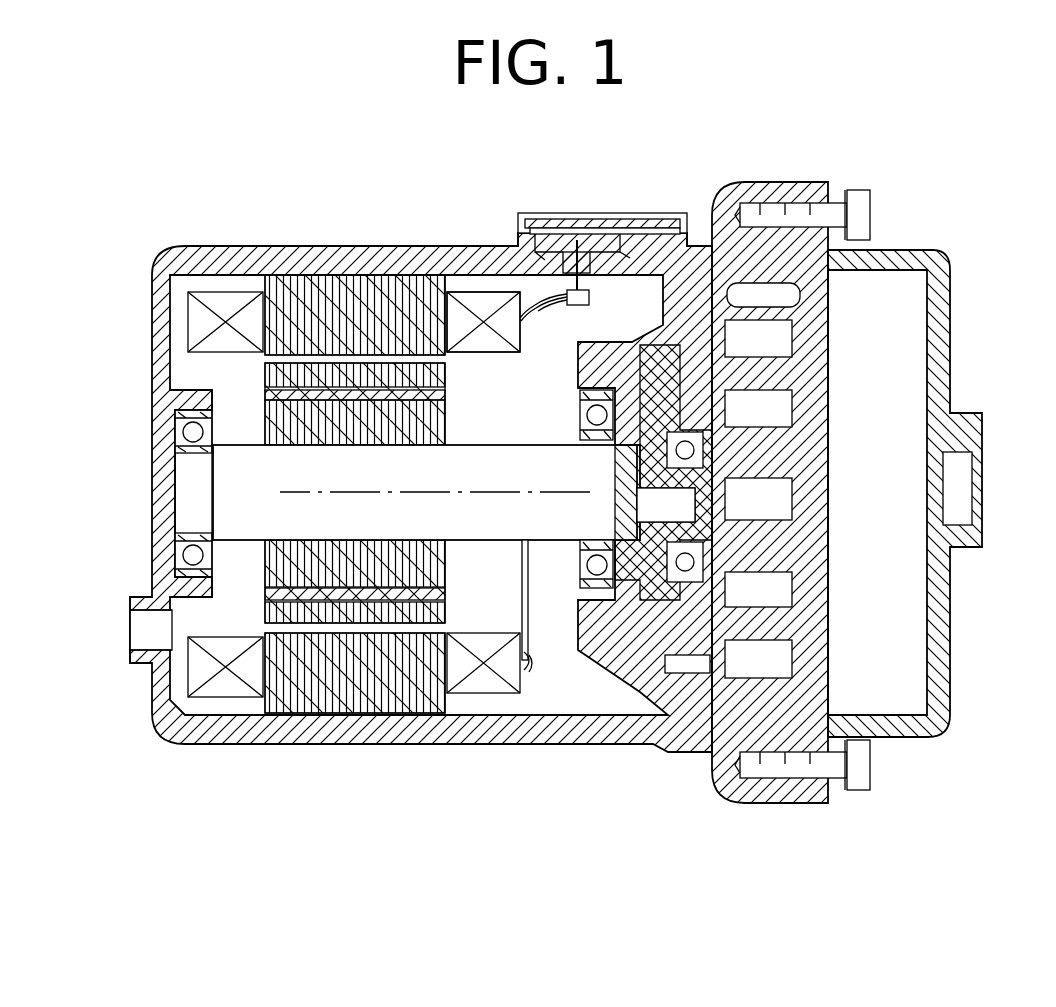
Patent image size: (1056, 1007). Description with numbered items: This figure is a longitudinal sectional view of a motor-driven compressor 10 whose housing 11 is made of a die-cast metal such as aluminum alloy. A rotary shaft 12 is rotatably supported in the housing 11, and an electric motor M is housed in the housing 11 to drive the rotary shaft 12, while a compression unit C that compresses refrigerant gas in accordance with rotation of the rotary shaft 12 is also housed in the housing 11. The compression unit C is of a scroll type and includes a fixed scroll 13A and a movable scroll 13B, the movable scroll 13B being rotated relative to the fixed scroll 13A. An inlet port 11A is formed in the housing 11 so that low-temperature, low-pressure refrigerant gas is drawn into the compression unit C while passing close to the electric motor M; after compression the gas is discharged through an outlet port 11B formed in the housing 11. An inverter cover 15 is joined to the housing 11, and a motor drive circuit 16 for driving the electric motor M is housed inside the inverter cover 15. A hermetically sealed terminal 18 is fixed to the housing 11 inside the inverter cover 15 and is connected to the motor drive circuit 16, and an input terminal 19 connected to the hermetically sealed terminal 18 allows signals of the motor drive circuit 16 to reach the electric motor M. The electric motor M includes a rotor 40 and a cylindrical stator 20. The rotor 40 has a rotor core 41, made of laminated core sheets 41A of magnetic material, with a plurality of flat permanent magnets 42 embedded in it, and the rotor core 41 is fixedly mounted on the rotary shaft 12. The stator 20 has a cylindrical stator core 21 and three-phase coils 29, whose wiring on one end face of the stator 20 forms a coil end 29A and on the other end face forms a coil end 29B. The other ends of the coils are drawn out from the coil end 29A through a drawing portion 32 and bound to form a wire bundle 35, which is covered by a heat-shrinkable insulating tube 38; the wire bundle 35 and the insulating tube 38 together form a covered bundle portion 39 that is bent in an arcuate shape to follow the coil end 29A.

The motor-driven compressor 10 is at (393, 238).
The housing 11 is at (455, 744).
The inlet port 11A is at (130, 630).
The outlet port 11B is at (962, 502).
The rotary shaft 12 is at (470, 445).
The fixed scroll 13A is at (825, 348).
The movable scroll 13B is at (690, 652).
The inverter cover 15 is at (668, 213).
The motor drive circuit 16 is at (610, 222).
The hermetically sealed terminal 18 is at (577, 248).
The input terminal 19 is at (590, 297).
The stator 20 is at (258, 280).
The stator core 21 is at (452, 275).
The three-phase coils 29 is at (520, 336).
The coil end 29A is at (505, 352).
The coil end 29B is at (188, 302).
The drawing portion 32 is at (535, 658).
The wire bundle 35 is at (538, 652).
The insulating tube 38 is at (522, 565).
The covered bundle portion 39 is at (530, 612).
The rotor 40 is at (82, 588).
The rotor core 41 is at (193, 555).
The core sheets 41A is at (265, 410).
The permanent magnets 42 is at (200, 590).
The compression unit C is at (838, 308).
The electric motor M is at (250, 375).